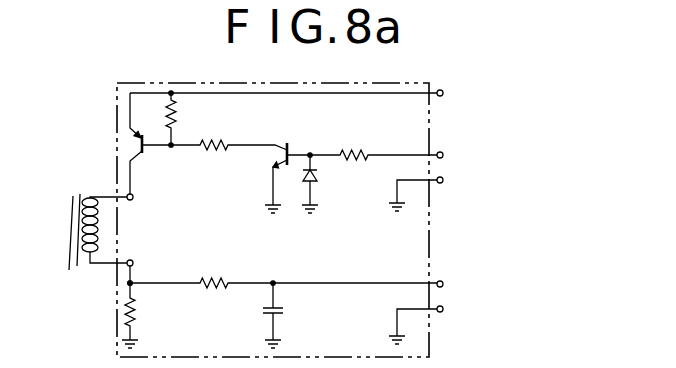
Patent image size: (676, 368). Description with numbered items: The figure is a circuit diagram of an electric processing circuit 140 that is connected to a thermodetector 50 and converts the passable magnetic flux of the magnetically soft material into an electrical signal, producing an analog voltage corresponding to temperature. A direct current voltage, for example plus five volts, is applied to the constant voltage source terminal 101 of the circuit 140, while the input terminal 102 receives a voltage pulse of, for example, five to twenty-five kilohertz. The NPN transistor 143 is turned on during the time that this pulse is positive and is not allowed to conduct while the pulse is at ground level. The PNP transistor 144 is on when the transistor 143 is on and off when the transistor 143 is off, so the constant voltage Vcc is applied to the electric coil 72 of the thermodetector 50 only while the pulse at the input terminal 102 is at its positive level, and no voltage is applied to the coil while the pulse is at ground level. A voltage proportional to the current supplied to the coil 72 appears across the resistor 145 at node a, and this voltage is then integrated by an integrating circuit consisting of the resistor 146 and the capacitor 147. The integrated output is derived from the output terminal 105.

The electric processing circuit 140 is at (124, 83).
The constant voltage source terminal 101 is at (442, 90).
The input terminal 102 is at (443, 152).
The output terminal 105 is at (443, 281).
The NPN transistor 143 is at (285, 139).
The PNP transistor 144 is at (143, 160).
The resistor 145 is at (138, 312).
The resistor 146 is at (220, 278).
The capacitor 147 is at (285, 311).
The thermodetector 50 is at (72, 227).
The electric coil 72 is at (89, 198).
The circuit node a is at (133, 281).